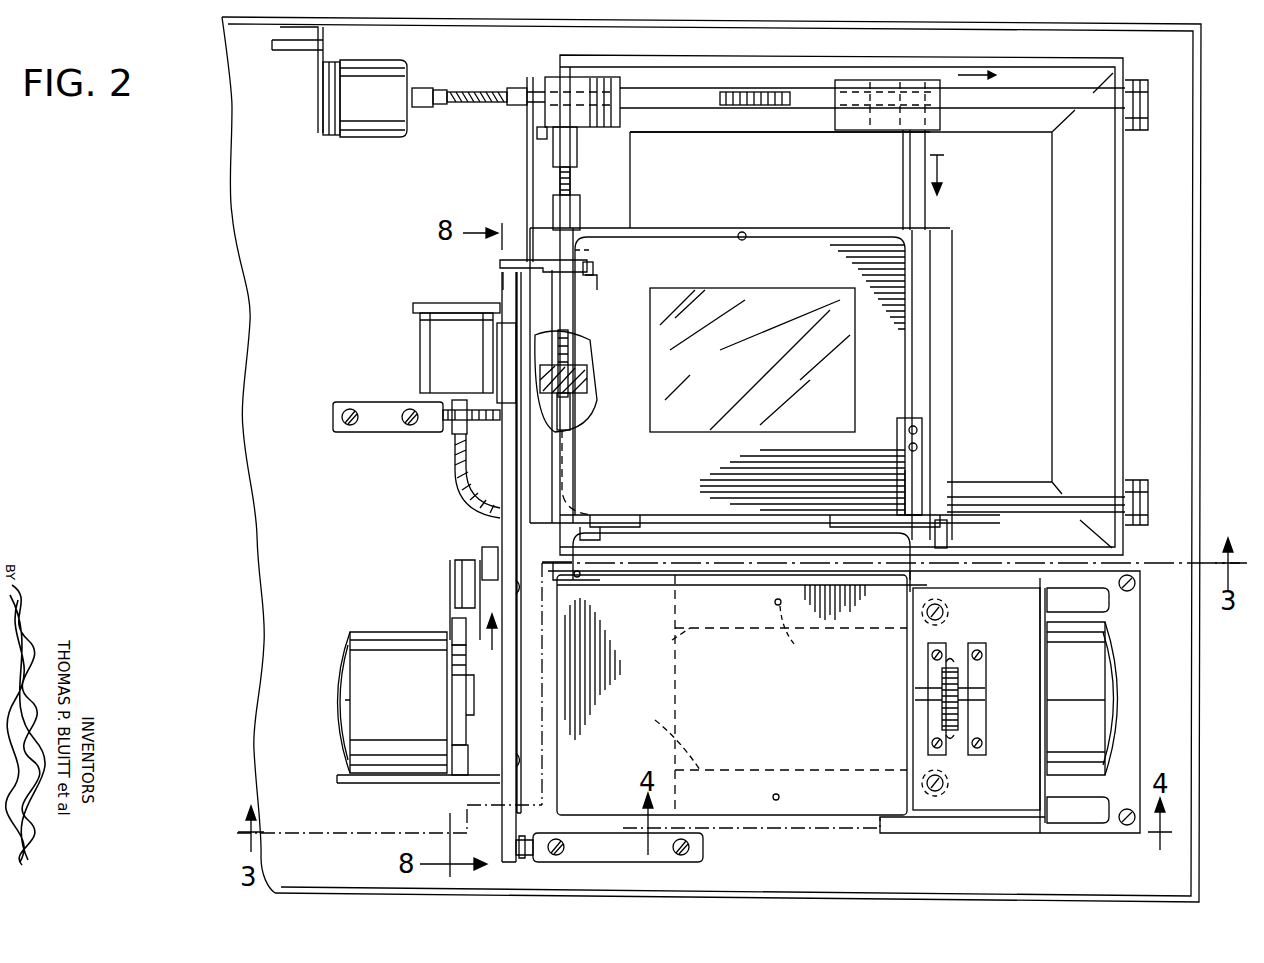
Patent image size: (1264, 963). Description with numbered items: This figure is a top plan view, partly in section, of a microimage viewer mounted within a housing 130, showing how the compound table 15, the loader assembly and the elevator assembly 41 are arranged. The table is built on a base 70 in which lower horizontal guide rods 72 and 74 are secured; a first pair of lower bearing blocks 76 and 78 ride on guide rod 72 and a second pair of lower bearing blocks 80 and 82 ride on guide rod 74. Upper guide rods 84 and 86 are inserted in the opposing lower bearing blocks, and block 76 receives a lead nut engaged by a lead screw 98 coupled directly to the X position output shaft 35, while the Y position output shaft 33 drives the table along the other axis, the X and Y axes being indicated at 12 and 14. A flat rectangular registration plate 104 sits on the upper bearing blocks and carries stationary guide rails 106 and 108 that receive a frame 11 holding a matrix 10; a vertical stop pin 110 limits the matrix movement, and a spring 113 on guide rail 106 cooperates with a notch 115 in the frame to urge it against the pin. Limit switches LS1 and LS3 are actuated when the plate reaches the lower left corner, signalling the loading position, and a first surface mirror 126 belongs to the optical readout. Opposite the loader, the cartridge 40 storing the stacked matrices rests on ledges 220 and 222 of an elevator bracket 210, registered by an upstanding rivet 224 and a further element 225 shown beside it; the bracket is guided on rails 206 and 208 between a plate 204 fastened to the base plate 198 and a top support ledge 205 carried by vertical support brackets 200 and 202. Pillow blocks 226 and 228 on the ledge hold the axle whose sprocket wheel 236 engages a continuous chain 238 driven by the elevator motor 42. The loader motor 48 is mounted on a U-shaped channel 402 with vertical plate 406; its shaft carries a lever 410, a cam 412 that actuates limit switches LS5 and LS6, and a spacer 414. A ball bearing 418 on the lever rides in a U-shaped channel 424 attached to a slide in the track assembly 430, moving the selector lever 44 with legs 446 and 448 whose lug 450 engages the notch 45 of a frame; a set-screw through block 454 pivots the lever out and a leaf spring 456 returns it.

The matrix 10 is at (764, 373).
The frame 11 is at (764, 497).
The X axis 12 is at (958, 75).
The Y axis 14 is at (945, 166).
The compound table 15 is at (955, 360).
The Y position output shaft 33 is at (455, 480).
The X position output shaft 35 is at (455, 95).
The cartridge 40 is at (771, 715).
The elevator assembly 41 is at (1026, 709).
The elevator motor 42 is at (1084, 702).
The selector lever 44 is at (515, 246).
The notch 45 is at (594, 268).
The loader motor 48 is at (401, 702).
The base 70 is at (1125, 257).
The lower horizontal guide rod 72 is at (678, 108).
The lower horizontal guide rod 74 is at (978, 500).
The lower bearing block 76 is at (870, 132).
The lower bearing block 78 is at (595, 140).
The lower bearing block 80 is at (850, 540).
The lower bearing block 82 is at (598, 538).
The upper guide rod 84 is at (912, 207).
The upper guide rod 86 is at (578, 212).
The lead screw 98 is at (745, 106).
The registration plate 104 is at (940, 296).
The guide rail 106 is at (925, 253).
The guide rail 108 is at (566, 505).
The stop pin 110 is at (744, 232).
The spring 113 is at (897, 440).
The notch 115 is at (905, 543).
The first surface mirror 126 is at (930, 697).
The housing 130 is at (1200, 305).
The base plate 198 is at (958, 865).
The vertical support bracket 200 is at (1075, 828).
The vertical support bracket 202 is at (1098, 605).
The plate 204 is at (1130, 704).
The top support ledge 205 is at (1002, 825).
The guide rail 206 is at (950, 790).
The guide rail 208 is at (950, 613).
The elevator bracket 210 is at (736, 772).
The ledge 220 is at (656, 726).
The ledge 222 is at (676, 646).
The upstanding rivet 224 is at (780, 797).
The terminal 225 is at (807, 630).
The pillow block 226 is at (928, 650).
The pillow block 228 is at (978, 670).
The central sprocket wheel 236 is at (940, 722).
The continuous chain 238 is at (978, 738).
The U-shaped channel 402 is at (345, 780).
The vertical plate 406 is at (522, 733).
The lever 410 is at (472, 607).
The cam 412 is at (458, 675).
The rectangular spacer 414 is at (462, 705).
The ball bearing 418 is at (485, 560).
The vertical U-shaped channel 424 is at (468, 595).
The track assembly 430 is at (498, 463).
The leg 446 is at (500, 290).
The leg 448 is at (585, 280).
The vertical lug 450 is at (592, 250).
The block 454 is at (495, 325).
The leaf spring 456 is at (505, 365).
The limit switch LS1 is at (540, 138).
The limit switch LS3 is at (948, 532).
The limit switch LS5 is at (452, 623).
The limit switch LS6 is at (465, 760).